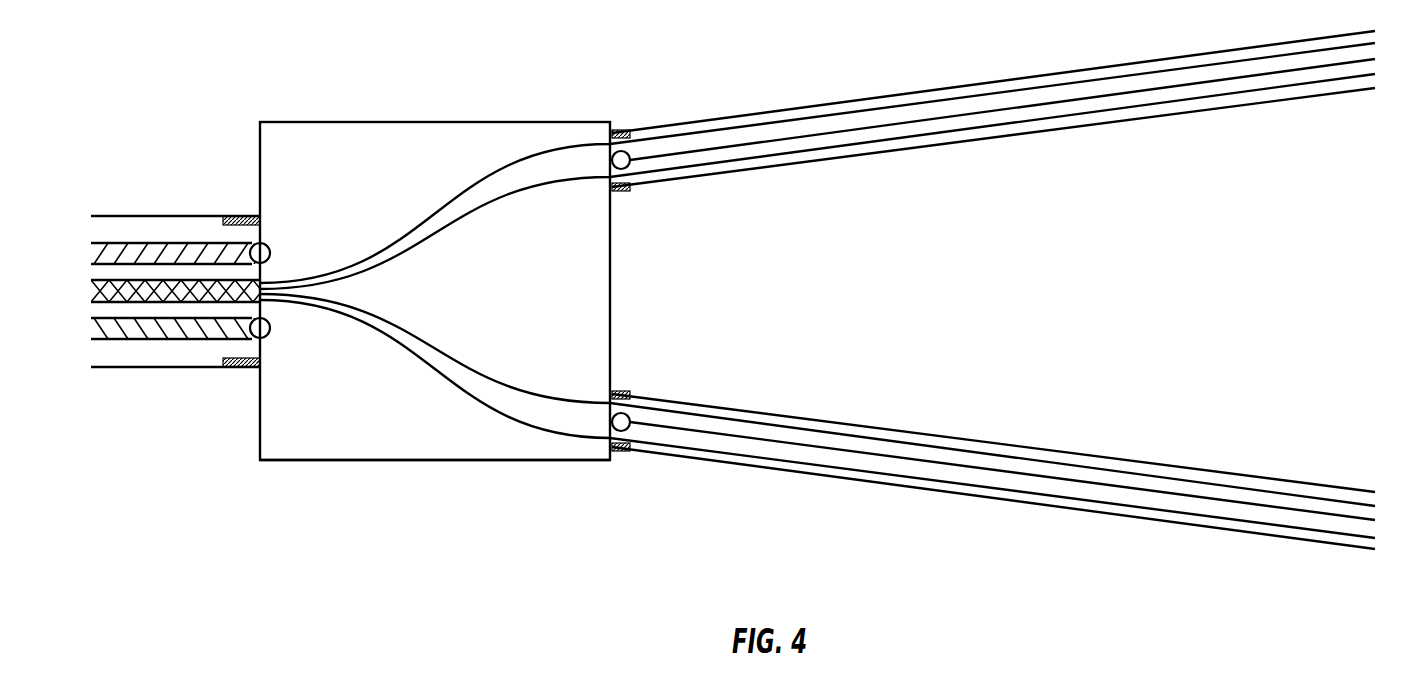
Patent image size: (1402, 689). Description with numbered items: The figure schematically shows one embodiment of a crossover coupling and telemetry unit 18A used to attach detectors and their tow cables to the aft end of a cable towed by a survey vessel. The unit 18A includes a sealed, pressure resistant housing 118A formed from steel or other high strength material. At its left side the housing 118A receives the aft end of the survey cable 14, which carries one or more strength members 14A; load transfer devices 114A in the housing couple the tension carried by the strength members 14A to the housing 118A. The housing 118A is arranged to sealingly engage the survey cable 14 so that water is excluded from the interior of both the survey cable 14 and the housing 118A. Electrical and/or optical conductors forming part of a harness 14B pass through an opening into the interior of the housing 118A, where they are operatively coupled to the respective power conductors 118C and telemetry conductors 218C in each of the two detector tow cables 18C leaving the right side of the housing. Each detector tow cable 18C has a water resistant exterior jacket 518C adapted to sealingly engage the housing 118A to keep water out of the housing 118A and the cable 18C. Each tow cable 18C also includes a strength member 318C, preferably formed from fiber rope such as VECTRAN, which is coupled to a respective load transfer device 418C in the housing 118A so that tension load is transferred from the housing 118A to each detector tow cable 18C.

The survey cable 14 is at (122, 216).
The strength members 14A is at (160, 243).
The harness 14B is at (103, 300).
The load transfer devices 114A is at (270, 253).
The crossover coupling and telemetry unit 18A is at (357, 122).
The housing 118A is at (435, 461).
The load transfer device 418C is at (612, 160).
The detector tow cable 18C is at (728, 117).
The power conductors 118C is at (866, 110).
The telemetry conductors 218C is at (907, 141).
The strength member 318C is at (1047, 106).
The exterior jacket 518C is at (698, 178).